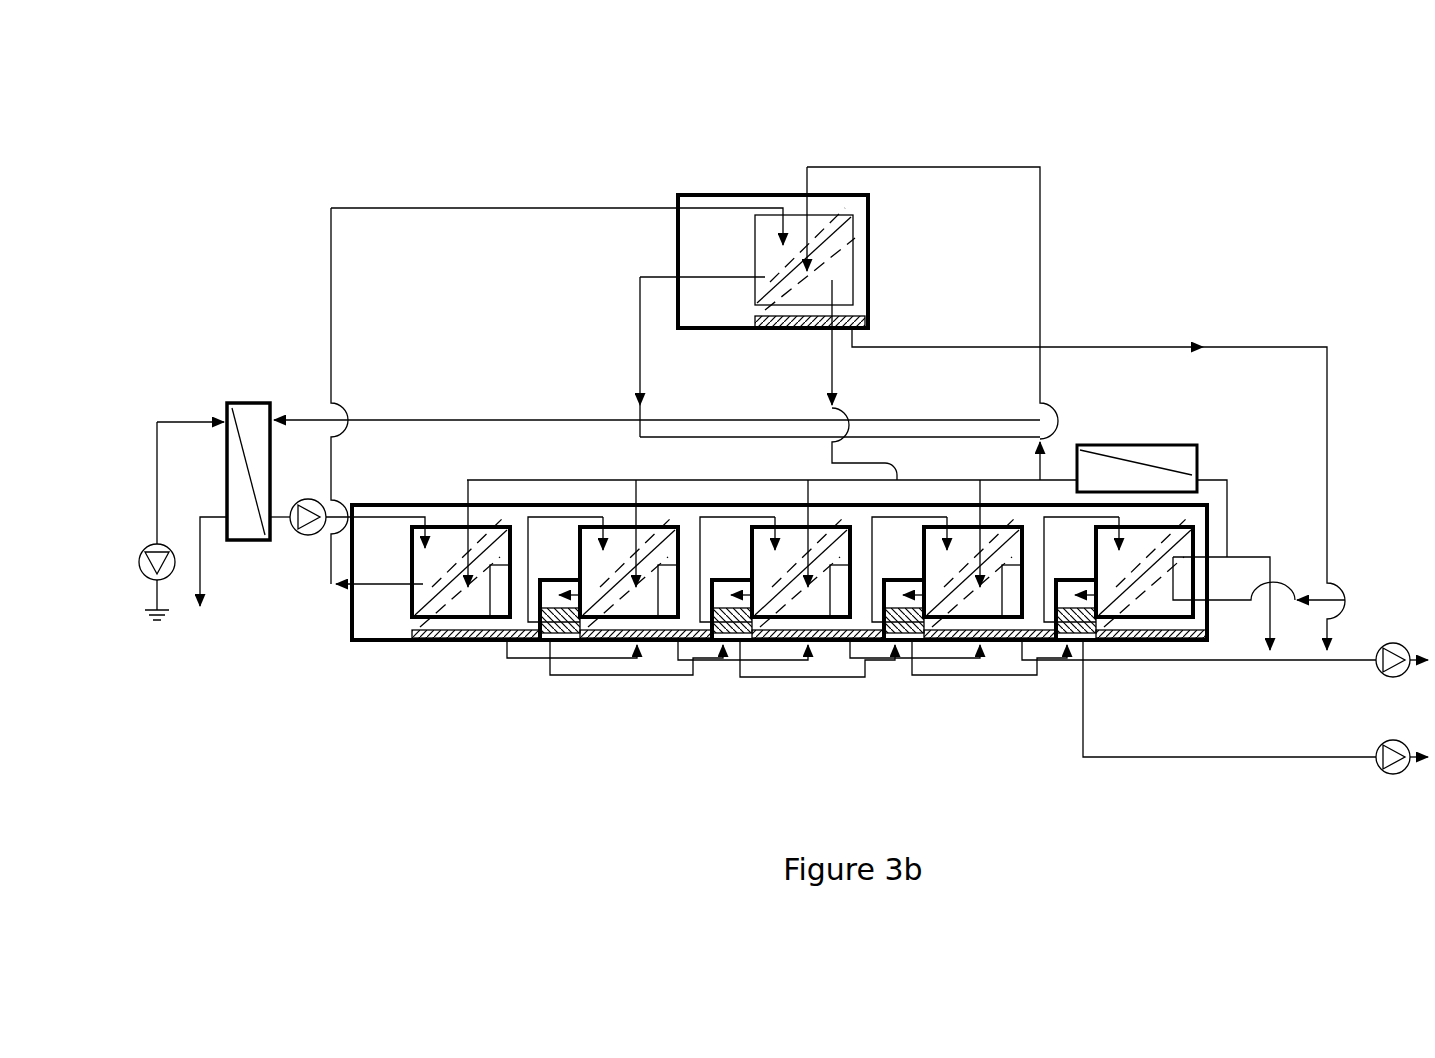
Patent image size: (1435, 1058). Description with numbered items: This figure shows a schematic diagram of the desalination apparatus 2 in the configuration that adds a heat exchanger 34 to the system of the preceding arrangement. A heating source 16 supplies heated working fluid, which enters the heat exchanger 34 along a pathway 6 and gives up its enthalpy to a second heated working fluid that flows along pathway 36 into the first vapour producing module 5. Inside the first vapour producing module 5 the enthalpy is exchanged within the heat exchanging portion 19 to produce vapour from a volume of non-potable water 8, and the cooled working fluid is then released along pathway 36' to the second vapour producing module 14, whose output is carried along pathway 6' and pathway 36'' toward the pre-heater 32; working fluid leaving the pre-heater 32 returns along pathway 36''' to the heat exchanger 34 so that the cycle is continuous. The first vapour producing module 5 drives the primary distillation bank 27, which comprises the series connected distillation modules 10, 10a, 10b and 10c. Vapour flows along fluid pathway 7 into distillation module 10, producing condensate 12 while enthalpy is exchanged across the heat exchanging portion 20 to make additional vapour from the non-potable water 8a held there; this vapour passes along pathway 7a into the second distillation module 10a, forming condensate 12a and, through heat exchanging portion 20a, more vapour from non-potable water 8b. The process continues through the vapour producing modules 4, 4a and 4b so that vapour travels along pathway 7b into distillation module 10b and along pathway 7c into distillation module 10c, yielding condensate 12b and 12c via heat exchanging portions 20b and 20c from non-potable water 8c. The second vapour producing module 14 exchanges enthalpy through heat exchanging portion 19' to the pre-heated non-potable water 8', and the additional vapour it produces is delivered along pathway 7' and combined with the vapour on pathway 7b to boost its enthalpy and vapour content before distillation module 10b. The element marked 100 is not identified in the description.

The apparatus 2 is at (1313, 303).
The vapour producing module 4 is at (650, 600).
The vapour producing module 4a is at (790, 600).
The vapour producing module 4b is at (1000, 620).
The first vapour producing module 5 is at (383, 698).
The pathway 6 is at (164, 501).
The pathway 6' is at (239, 561).
The fluid pathway 7 is at (565, 529).
The pathway 7' is at (864, 380).
The pathway 7a is at (722, 517).
The pathway 7b is at (920, 505).
The pathway 7c is at (1082, 515).
The non-potable water 8 is at (476, 666).
The non-potable water 8' is at (860, 305).
The non-potable water 8a is at (690, 641).
The non-potable water 8b is at (832, 646).
The non-potable water 8c is at (960, 645).
The first distillation module 10 is at (660, 528).
The second distillation module 10a is at (800, 522).
The distillation module 10b is at (965, 535).
The distillation module 10c is at (1175, 540).
The condensate 12 is at (568, 645).
The condensate 12a is at (745, 646).
The condensate 12b is at (905, 646).
The condensate 12c is at (1112, 641).
The second vapour producing module 14 is at (773, 172).
The heating source 16 is at (160, 622).
The heat exchanging portion 19 is at (475, 532).
The heat exchanging portion 19' is at (869, 195).
The heat exchanging portion 20 is at (632, 600).
The heat exchanging portion 20a is at (840, 568).
The heat exchanging portion 20b is at (990, 600).
The heat exchanging portion 20c is at (1160, 600).
The primary distillation bank 27 is at (518, 781).
The pre-heater 32 is at (1200, 462).
The heat exchanger 34 is at (248, 422).
The pathway 36 is at (347, 510).
The working fluid pathway 36' is at (557, 396).
The pathway 36'' is at (664, 357).
The pathway 36''' is at (657, 398).
The sweep gas inlet 100 is at (1345, 600).